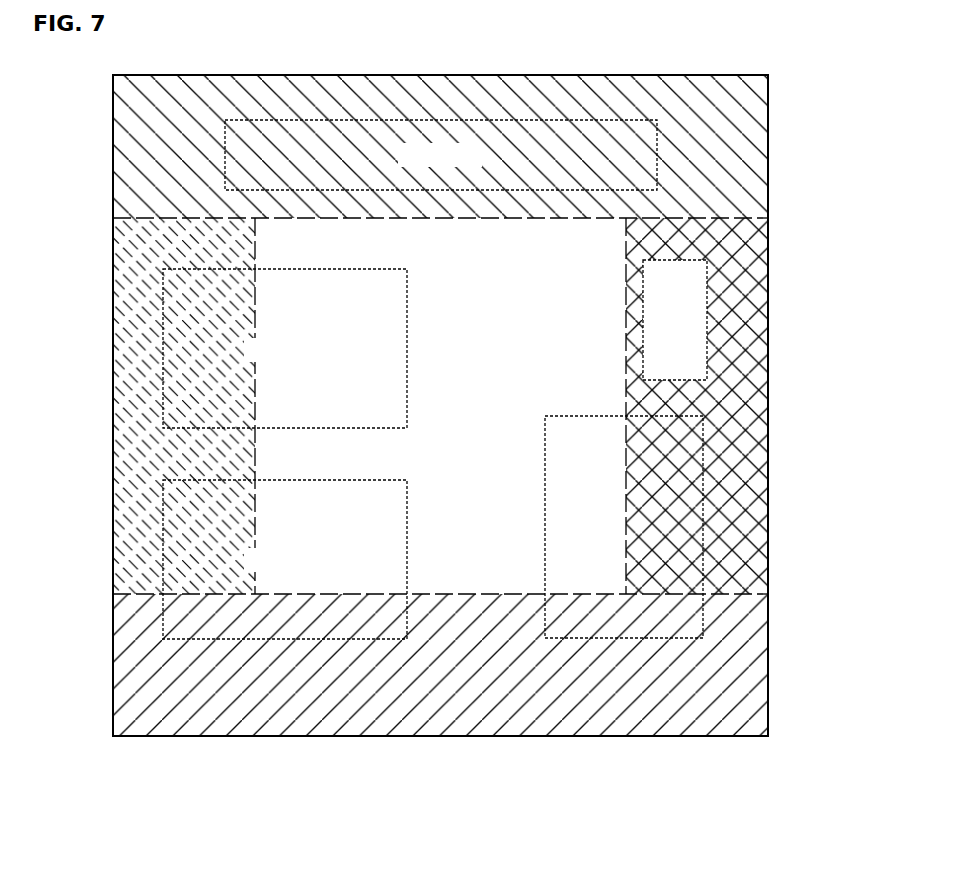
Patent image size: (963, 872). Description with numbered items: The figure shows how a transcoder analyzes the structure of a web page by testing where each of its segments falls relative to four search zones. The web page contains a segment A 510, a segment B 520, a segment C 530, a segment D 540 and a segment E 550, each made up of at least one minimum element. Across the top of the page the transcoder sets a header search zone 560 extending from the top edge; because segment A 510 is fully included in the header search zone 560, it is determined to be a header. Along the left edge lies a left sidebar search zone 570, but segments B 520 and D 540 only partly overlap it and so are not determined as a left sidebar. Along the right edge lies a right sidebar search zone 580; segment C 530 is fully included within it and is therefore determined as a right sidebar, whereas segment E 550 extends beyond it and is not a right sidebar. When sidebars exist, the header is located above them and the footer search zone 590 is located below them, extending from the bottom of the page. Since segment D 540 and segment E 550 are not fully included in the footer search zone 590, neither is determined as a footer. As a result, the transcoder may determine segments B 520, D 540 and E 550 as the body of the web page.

The segment A 510 is at (441, 155).
The segment B 520 is at (285, 348).
The segment C 530 is at (675, 320).
The segment D 540 is at (285, 559).
The segment E 550 is at (624, 527).
The header search zone 560 is at (759, 146).
The left sidebar search zone 570 is at (113, 322).
The right sidebar search zone 580 is at (758, 325).
The footer search zone 590 is at (463, 714).